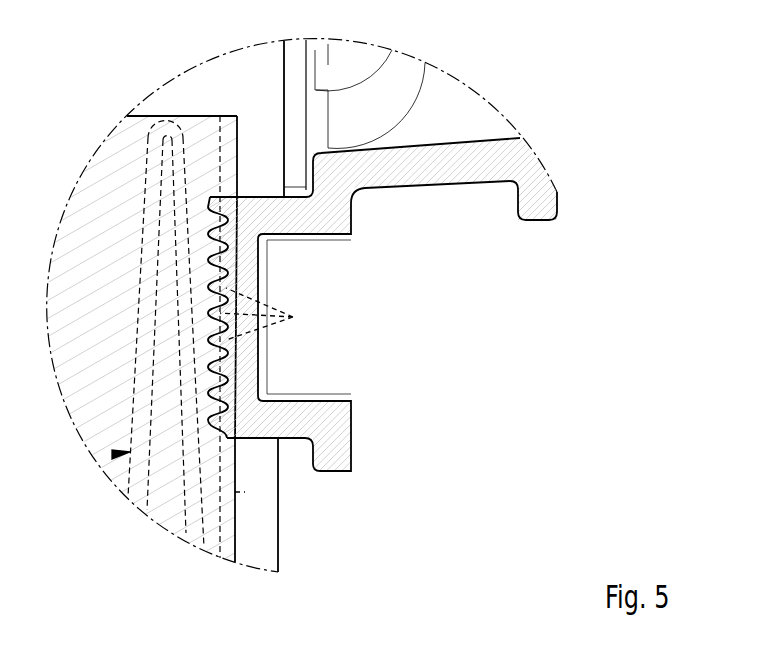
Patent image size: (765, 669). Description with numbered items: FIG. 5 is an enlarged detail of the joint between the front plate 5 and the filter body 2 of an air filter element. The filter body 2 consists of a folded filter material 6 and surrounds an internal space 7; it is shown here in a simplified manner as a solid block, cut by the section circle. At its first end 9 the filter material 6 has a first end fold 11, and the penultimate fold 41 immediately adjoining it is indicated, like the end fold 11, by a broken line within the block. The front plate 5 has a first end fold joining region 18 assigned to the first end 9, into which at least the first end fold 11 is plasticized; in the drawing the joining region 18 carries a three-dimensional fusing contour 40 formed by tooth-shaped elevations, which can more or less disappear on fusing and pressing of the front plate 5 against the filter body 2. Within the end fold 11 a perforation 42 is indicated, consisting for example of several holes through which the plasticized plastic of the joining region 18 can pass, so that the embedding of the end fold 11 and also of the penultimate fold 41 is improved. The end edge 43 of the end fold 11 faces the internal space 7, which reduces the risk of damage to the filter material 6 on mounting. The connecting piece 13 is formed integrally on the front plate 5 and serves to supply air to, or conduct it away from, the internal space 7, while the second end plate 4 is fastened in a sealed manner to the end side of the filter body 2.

The filter body 2 is at (252, 521).
The second end plate 4 is at (296, 557).
The front plate 5 is at (446, 200).
The filter material 6 is at (112, 455).
The internal space 7 is at (194, 102).
The first end 9 is at (230, 548).
The first end fold 11 is at (245, 492).
The connecting piece 13 is at (548, 205).
The first end fold joining region 18 is at (245, 272).
The fusing contour 40 is at (222, 363).
The penultimate fold 41 is at (190, 512).
The perforation 42 is at (293, 317).
The end edge 43 is at (231, 118).